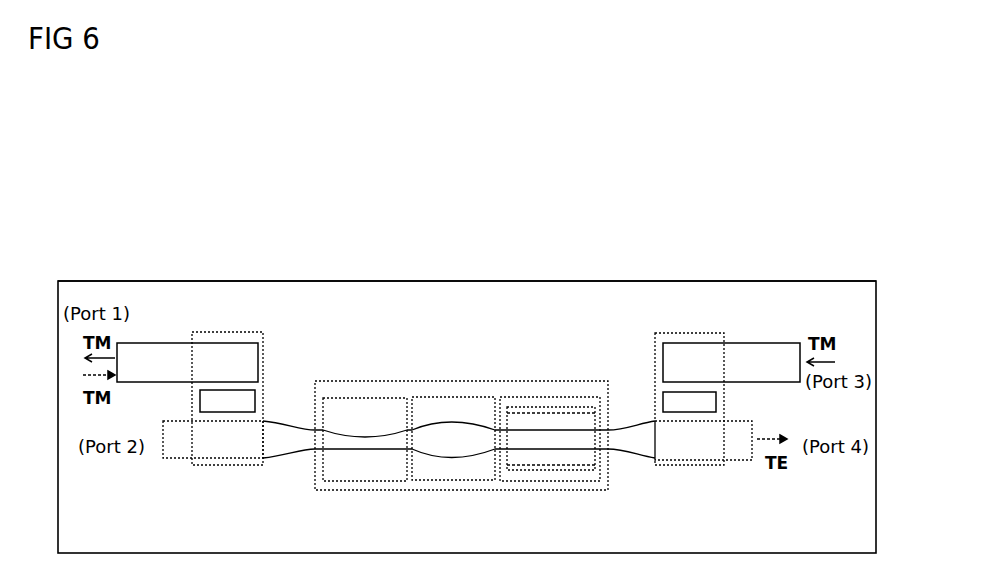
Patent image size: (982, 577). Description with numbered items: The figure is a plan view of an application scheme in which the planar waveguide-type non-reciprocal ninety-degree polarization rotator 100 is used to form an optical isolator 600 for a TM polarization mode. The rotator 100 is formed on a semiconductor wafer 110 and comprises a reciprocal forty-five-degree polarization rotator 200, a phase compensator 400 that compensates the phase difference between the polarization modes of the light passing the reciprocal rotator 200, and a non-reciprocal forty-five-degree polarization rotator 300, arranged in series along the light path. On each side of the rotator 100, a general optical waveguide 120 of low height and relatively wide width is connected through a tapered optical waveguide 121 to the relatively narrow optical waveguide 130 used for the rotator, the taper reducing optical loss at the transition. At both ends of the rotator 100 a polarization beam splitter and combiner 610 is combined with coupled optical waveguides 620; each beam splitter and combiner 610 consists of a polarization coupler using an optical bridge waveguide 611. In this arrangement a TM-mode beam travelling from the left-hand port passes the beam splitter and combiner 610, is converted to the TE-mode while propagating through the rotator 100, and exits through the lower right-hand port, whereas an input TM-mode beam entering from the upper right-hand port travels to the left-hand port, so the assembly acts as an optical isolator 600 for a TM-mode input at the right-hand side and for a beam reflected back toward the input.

The planar waveguide-type non-reciprocal 90° polarization rotator 100 is at (461, 450).
The semiconductor wafer 110 is at (467, 417).
The optical waveguide 120 is at (463, 454).
The tapered optical waveguide 121 is at (273, 458).
The optical waveguide 130 is at (307, 455).
The reciprocal 45° polarization rotator 200 is at (365, 431).
The non-reciprocal 45° polarization rotator 300 is at (550, 431).
The phase compensator 400 is at (453, 431).
The optical isolator 600 is at (467, 267).
The polarization beam splitter and combiner 610 is at (458, 386).
The optical bridge waveguide 611 is at (200, 400).
The coupled optical waveguide 620 is at (458, 349).